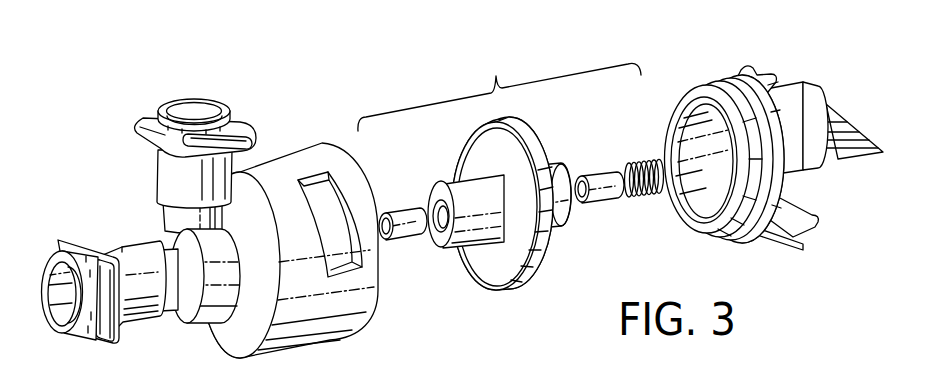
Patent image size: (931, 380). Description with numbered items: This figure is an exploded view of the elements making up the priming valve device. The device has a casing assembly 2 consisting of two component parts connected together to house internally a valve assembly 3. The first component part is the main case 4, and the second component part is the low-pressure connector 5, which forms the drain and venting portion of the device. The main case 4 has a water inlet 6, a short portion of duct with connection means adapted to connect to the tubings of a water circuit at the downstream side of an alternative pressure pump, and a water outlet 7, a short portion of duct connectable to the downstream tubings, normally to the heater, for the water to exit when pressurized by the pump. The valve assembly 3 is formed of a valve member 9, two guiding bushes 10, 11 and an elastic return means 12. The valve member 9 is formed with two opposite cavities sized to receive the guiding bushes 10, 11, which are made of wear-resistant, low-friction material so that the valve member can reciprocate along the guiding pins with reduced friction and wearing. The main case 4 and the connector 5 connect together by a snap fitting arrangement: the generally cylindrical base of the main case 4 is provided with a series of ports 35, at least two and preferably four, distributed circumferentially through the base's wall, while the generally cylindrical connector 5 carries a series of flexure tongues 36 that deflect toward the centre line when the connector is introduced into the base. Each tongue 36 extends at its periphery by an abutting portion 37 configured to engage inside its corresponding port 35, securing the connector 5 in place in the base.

The casing assembly 2 is at (333, 117).
The valve assembly 3 is at (499, 92).
The main case 4 is at (172, 322).
The low-pressure connector 5 is at (813, 79).
The water inlet 6 is at (65, 317).
The water outlet 7 is at (194, 99).
The valve member 9 is at (546, 282).
The guiding bush 10 is at (407, 241).
The guiding bush 11 is at (597, 204).
The elastic return means 12 is at (653, 196).
The port 35 is at (326, 195).
The flexure tongue 36 is at (818, 221).
The abutting portion 37 is at (803, 247).